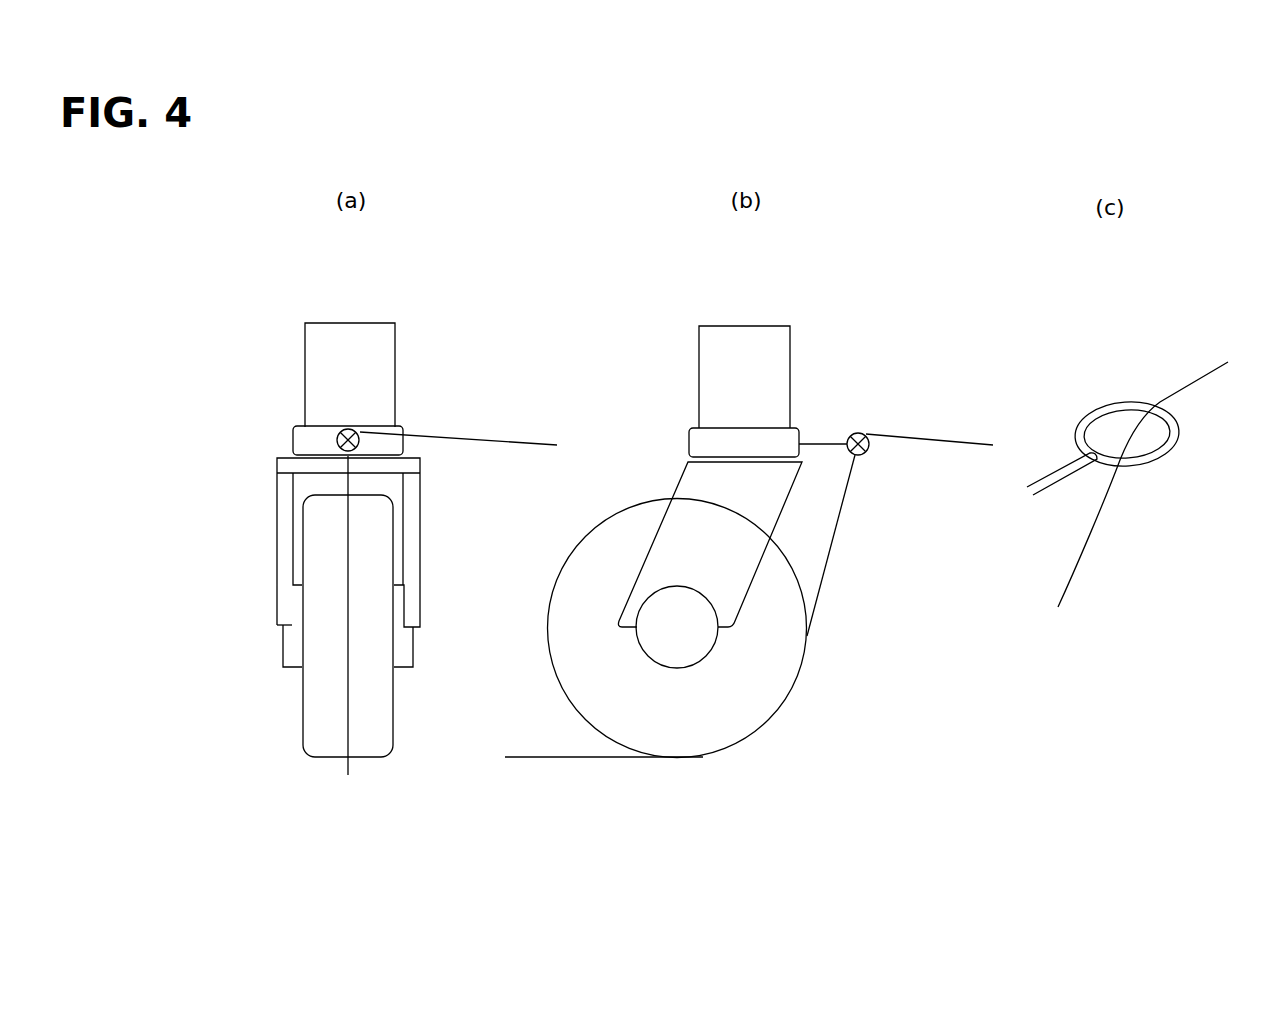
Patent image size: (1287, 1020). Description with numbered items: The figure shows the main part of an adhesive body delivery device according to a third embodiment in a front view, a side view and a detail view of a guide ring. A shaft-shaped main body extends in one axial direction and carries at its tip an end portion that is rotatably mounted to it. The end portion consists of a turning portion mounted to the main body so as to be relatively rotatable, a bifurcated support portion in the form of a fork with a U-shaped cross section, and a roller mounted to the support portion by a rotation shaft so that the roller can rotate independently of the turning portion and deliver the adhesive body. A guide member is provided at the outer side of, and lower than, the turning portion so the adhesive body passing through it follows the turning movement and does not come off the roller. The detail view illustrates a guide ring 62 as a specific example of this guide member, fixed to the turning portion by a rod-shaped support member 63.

The guide ring 62 is at (1122, 401).
The rod-shaped support member 63 is at (1062, 468).